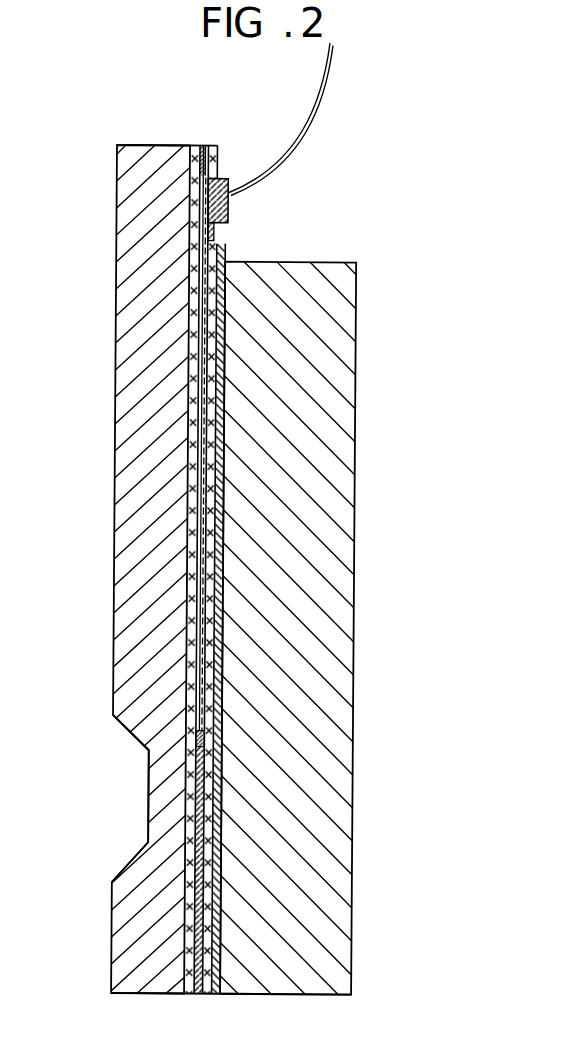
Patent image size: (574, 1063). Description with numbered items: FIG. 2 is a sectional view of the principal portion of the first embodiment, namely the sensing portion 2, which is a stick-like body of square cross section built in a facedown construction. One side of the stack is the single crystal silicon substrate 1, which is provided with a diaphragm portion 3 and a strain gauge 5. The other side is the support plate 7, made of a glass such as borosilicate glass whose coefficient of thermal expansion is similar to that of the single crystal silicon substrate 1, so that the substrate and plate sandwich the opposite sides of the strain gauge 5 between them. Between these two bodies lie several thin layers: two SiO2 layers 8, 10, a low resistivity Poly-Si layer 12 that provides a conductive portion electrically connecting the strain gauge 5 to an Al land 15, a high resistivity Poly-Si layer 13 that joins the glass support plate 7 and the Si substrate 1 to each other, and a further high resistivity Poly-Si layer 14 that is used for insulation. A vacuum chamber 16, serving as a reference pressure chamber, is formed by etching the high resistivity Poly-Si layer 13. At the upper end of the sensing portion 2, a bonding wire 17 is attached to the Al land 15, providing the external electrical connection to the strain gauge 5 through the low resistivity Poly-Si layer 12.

The single crystal silicon substrate 1 is at (137, 982).
The sensing portion 2 is at (378, 898).
The diaphragm portion 3 is at (141, 785).
The strain gauge 5 is at (205, 734).
The support plate 7 is at (342, 980).
The SiO2 layer 8 is at (194, 603).
The SiO2 layer 10 is at (216, 644).
The low resistivity Poly-Si layer 12 is at (207, 514).
The high resistivity Poly-Si layer 13 is at (218, 351).
The high resistivity Poly-Si layer 14 is at (188, 994).
The Al land 15 is at (233, 201).
The vacuum chamber 16 is at (215, 852).
The bonding wire 17 is at (317, 115).